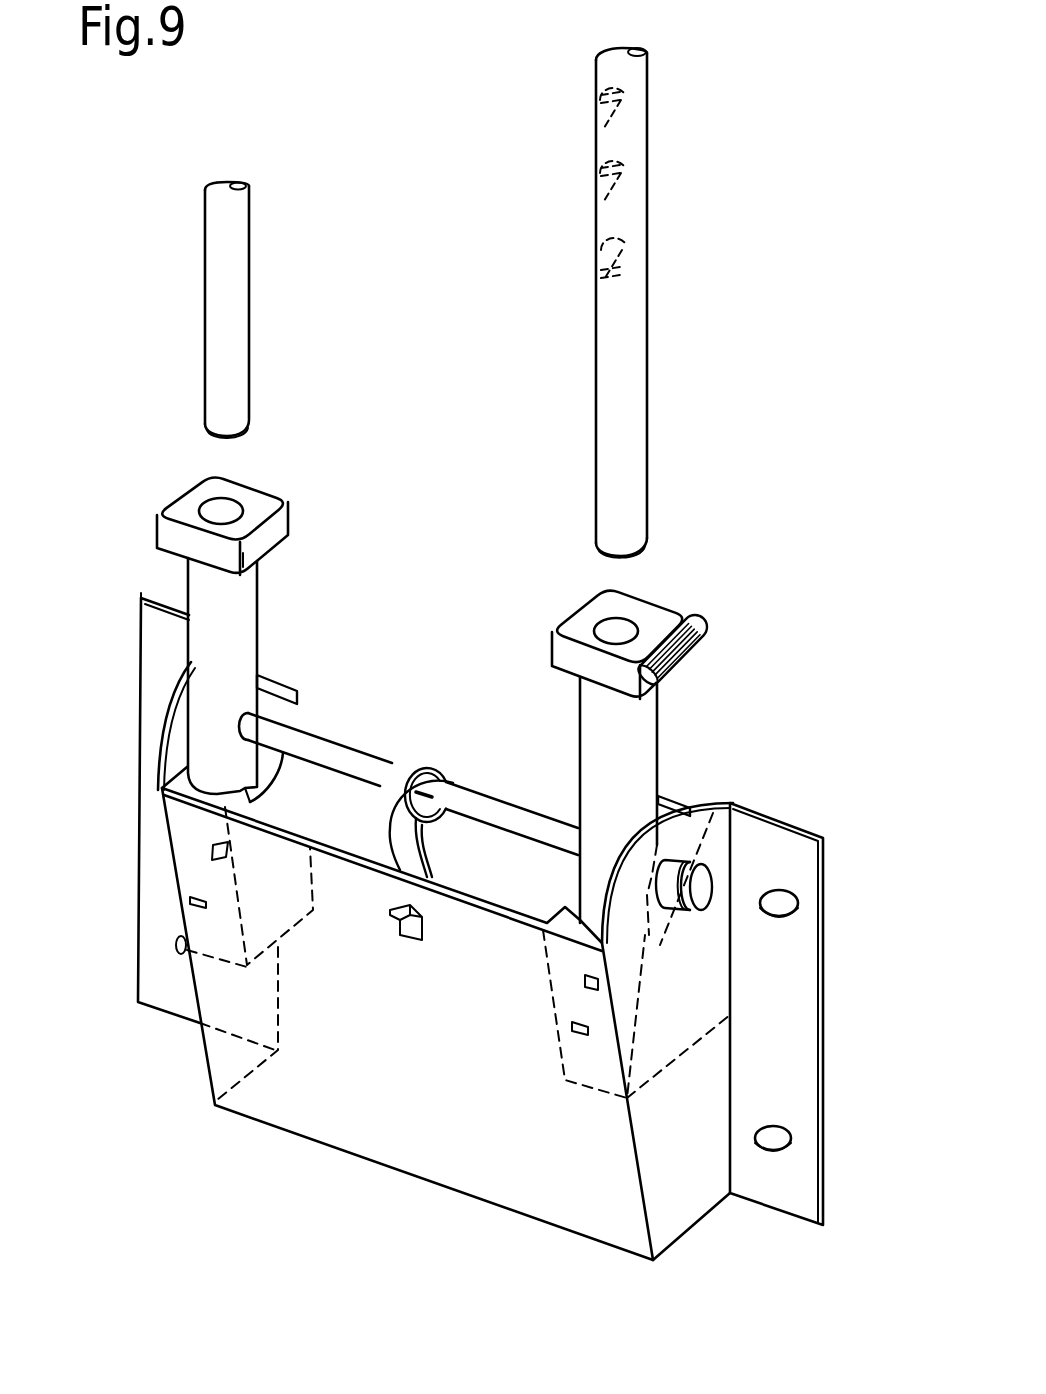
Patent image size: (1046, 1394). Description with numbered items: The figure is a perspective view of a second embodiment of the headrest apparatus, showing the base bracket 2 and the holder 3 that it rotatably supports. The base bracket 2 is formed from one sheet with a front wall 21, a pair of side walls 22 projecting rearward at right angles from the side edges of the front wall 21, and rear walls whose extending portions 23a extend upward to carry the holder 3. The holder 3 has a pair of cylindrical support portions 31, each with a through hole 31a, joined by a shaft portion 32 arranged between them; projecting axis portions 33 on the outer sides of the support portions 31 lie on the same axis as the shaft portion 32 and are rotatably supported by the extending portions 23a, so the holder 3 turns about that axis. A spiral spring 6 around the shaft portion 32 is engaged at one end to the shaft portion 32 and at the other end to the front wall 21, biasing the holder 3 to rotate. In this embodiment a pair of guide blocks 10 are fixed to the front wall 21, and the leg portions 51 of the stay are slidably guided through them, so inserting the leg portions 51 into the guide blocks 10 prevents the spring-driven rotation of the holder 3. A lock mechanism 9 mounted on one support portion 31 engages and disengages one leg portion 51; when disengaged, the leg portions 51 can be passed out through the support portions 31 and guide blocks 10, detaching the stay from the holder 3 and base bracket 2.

The base bracket 2 is at (473, 960).
The holder 3 is at (429, 673).
The spiral spring 6 is at (414, 753).
The lock mechanism 9 is at (692, 635).
The guide block 10 is at (268, 814).
The front wall 21 is at (480, 1175).
The side wall 22 is at (227, 1061).
The extending portion 23a is at (287, 712).
The support portion 31 is at (240, 618).
The through hole 31a is at (225, 514).
The shaft portion 32 is at (352, 758).
The projecting axis portion 33 is at (710, 897).
The leg portion 51 is at (233, 310).